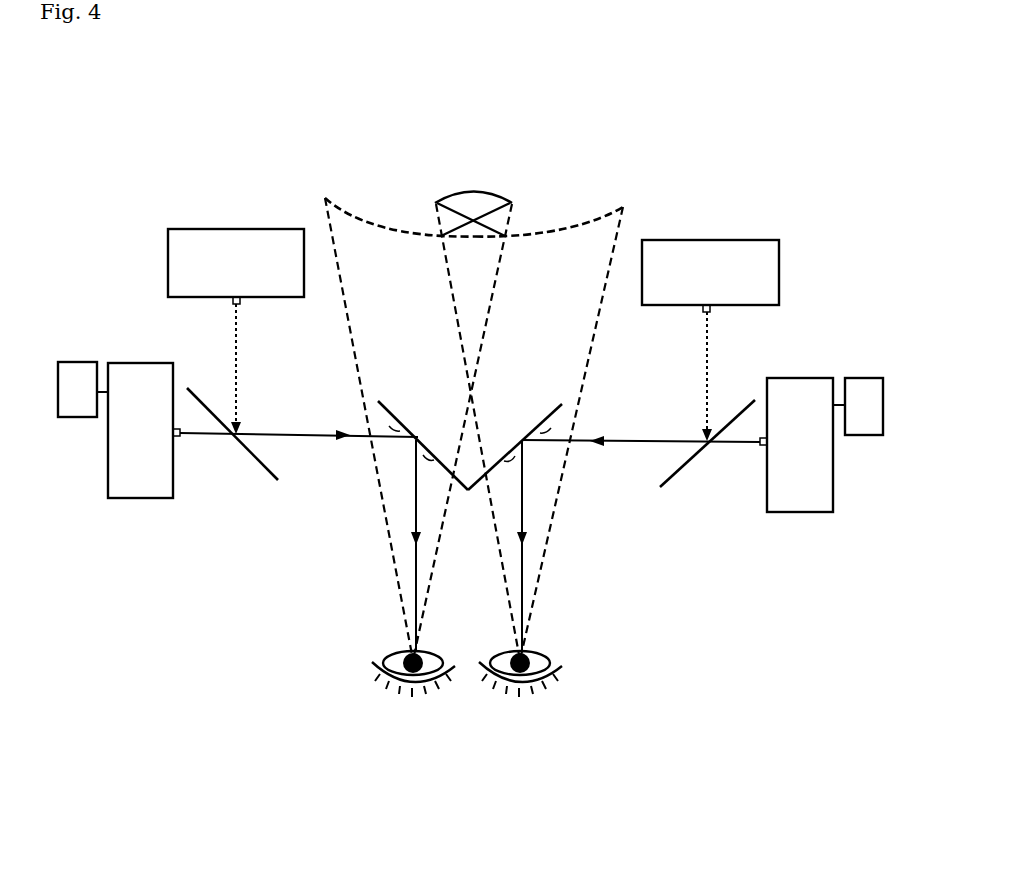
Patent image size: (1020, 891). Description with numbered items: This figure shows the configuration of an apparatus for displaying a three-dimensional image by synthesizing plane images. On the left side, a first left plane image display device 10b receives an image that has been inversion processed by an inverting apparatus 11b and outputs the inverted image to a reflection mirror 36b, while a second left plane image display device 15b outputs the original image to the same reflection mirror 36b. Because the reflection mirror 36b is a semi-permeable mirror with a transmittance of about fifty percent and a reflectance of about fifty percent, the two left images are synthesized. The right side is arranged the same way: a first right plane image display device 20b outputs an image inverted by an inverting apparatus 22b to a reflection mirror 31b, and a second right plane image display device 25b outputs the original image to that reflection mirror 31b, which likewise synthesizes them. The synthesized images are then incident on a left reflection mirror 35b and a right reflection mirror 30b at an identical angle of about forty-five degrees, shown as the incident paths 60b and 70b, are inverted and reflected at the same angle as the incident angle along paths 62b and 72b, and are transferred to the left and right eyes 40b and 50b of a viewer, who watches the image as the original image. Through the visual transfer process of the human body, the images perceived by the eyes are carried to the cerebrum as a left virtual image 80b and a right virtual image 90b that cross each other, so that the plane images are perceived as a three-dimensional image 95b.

The first left plane image display device 10b is at (147, 367).
The inverting apparatus 11b is at (70, 362).
The second left plane image display device 15b is at (208, 229).
The first right plane image display device 20b is at (812, 378).
The inverting apparatus 22b is at (872, 378).
The second right plane image display device 25b is at (738, 240).
The right reflection mirror 30b is at (549, 400).
The reflection mirror 31b is at (688, 467).
The left reflection mirror 35b is at (391, 399).
The reflection mirror 36b is at (253, 458).
The left eye 40b is at (410, 690).
The right eye 50b is at (525, 690).
The incident image on left reflection mirror 60b is at (373, 448).
The reflected image to left eye 62b is at (410, 567).
The incident image on right reflection mirror 70b is at (561, 455).
The reflected image to right eye 72b is at (523, 570).
The left virtual image 80b is at (360, 222).
The right virtual image 90b is at (592, 223).
The 3-dimensional image 95b is at (473, 192).